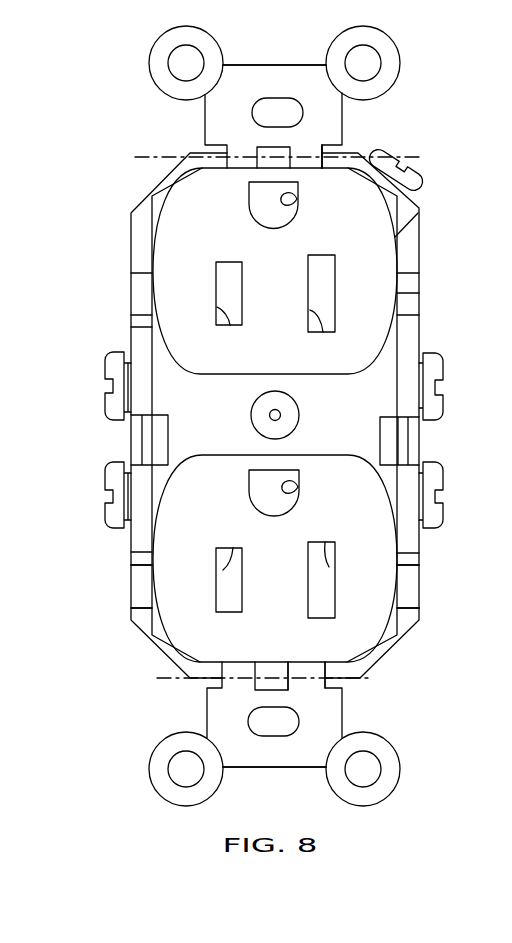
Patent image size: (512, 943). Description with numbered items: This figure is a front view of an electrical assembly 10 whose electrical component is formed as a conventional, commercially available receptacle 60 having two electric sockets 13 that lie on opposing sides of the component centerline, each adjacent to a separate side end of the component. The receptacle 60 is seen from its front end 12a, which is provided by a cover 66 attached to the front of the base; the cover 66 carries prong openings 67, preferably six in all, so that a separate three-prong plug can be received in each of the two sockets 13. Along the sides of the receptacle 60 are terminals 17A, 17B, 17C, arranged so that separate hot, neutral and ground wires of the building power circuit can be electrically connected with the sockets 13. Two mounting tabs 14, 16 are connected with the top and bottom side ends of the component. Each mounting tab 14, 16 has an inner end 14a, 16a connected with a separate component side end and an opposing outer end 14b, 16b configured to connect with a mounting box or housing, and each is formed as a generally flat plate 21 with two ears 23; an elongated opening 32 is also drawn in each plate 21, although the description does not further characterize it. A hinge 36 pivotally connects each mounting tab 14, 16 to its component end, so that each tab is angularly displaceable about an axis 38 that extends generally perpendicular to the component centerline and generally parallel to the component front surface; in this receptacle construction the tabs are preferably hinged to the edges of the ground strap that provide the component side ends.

The electrical assembly 10 is at (78, 290).
The front end 12a is at (400, 355).
The electrical socket 13 is at (168, 248).
The mounting tab 14 is at (160, 115).
The inner end 14a is at (335, 137).
The outer end 14b is at (245, 63).
The mounting tab 16 is at (158, 713).
The inner end 16a is at (303, 672).
The outer end 16b is at (300, 768).
The terminal 17A is at (445, 371).
The terminal 17B is at (104, 370).
The terminal 17C is at (131, 583).
The flat plate 21 is at (323, 118).
The ear 23 is at (148, 48).
The strap slot 32 is at (277, 107).
The hinge 36 is at (228, 182).
The axis 38 is at (142, 157).
The receptacle 60 is at (432, 268).
The cover 66 is at (412, 400).
The prong opening 67 is at (298, 204).